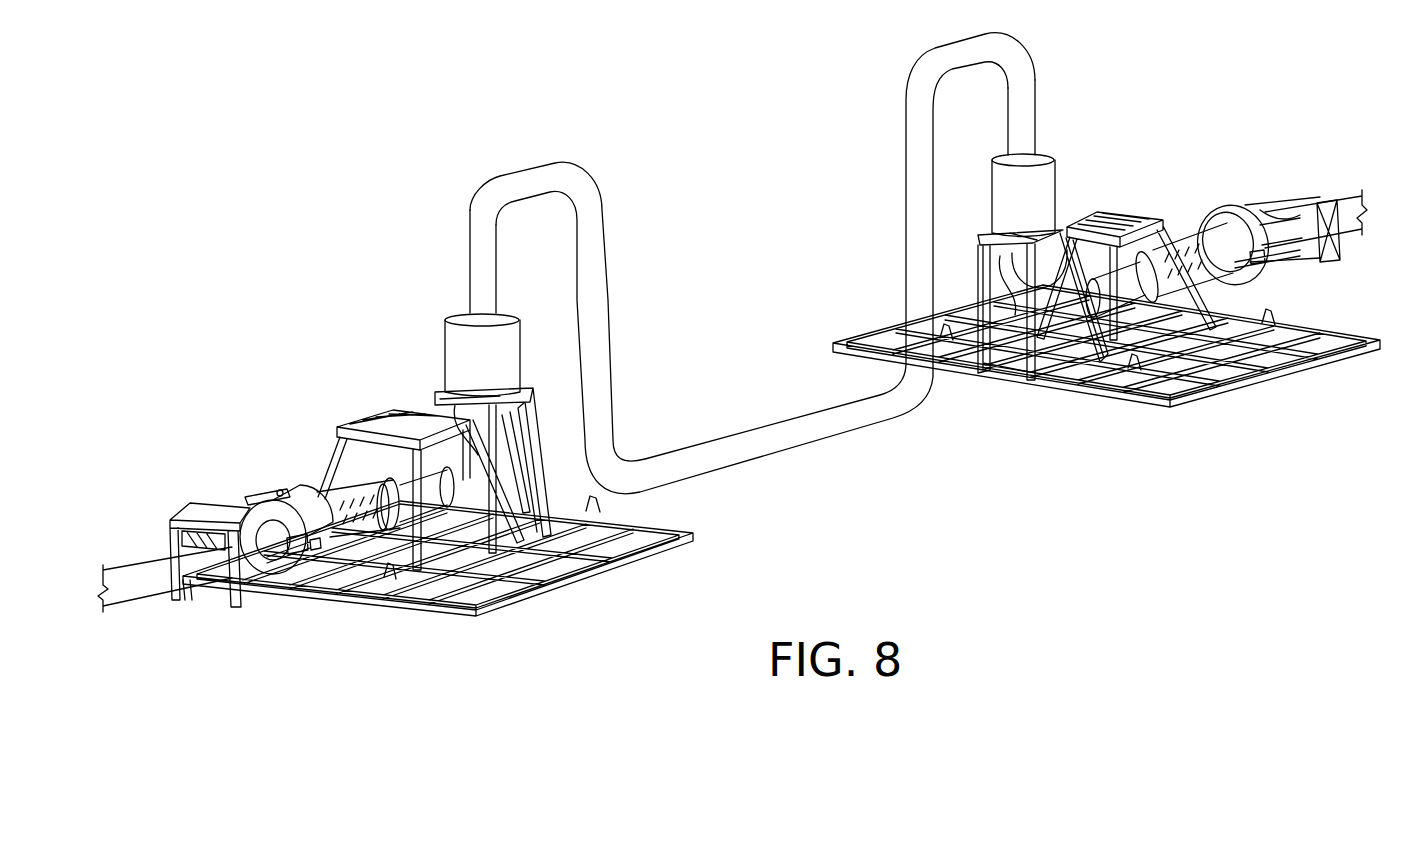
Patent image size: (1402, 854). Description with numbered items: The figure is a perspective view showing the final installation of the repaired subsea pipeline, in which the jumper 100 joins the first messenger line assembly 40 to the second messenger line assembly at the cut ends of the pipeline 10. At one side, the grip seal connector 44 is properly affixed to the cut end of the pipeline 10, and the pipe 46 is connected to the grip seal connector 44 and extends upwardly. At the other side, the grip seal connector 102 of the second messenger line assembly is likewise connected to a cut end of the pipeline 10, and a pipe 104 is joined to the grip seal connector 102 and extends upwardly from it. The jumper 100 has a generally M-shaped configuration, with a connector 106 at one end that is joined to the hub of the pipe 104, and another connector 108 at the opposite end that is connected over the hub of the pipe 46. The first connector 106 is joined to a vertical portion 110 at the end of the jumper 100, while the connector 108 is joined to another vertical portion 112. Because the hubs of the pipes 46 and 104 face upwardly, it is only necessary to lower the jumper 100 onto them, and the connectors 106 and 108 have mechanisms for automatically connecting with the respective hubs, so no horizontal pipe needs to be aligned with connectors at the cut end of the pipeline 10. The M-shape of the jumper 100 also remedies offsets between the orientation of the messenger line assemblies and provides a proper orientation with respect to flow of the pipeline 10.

The pipeline 10 is at (153, 587).
The first messenger line assembly 40 is at (1112, 168).
The grip seal connector 44 is at (1187, 250).
The pipe 46 is at (1060, 310).
The jumper 100 is at (603, 274).
The grip seal connector 102 is at (345, 468).
The pipe 104 is at (530, 422).
The connector 106 is at (455, 347).
The connector 108 is at (1046, 185).
The vertical portion 110 is at (478, 268).
The vertical portion 112 is at (1030, 88).